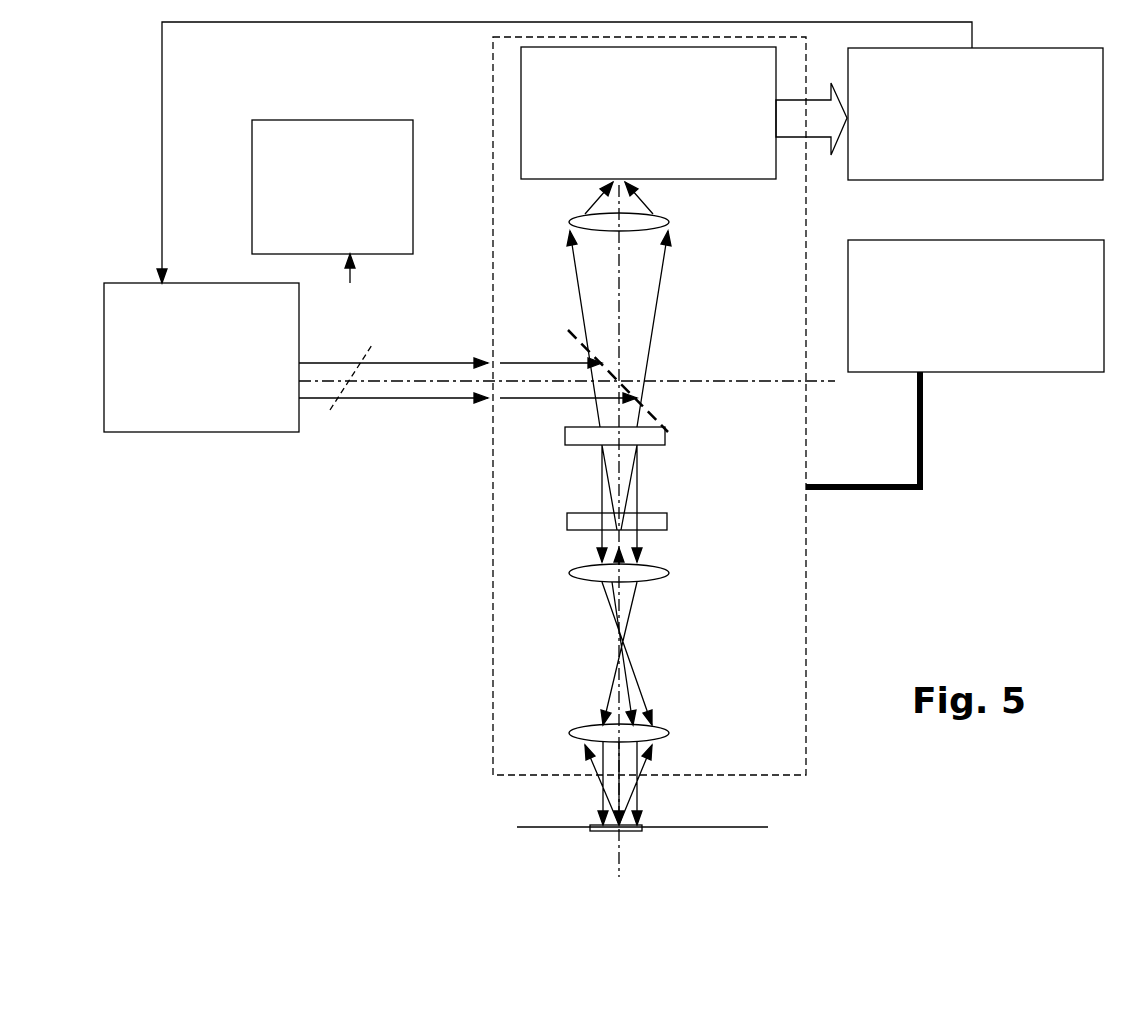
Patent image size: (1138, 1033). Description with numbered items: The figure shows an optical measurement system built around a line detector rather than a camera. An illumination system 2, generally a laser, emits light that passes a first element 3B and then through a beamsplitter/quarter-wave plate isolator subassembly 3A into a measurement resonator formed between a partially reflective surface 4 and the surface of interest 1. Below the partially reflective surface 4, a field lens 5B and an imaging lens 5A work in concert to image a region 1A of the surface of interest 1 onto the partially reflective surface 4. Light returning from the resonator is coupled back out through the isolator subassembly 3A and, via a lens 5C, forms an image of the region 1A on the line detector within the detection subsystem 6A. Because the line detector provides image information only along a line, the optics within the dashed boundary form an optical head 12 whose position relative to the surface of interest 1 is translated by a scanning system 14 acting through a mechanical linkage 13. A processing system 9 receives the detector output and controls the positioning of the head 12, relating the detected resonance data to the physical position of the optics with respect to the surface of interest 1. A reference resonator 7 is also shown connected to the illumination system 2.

The surface of interest 1 is at (752, 827).
The region of surface of interest 1A is at (631, 836).
The illumination system 2 is at (201, 357).
The beamsplitter/quarter-wave plate isolator subassembly 3A is at (668, 432).
The beam splitter 3B is at (372, 345).
The partially reflective surface 4 is at (590, 531).
The imaging lens 5A is at (668, 733).
The field lens 5B is at (668, 573).
The lens 5C is at (668, 222).
The detection subsystem 6A is at (648, 113).
The reference resonator 7 is at (332, 187).
The processing system 9 is at (975, 114).
The optical head 12 is at (738, 432).
The mechanical linkage 13 is at (921, 440).
The scanning system 14 is at (976, 306).